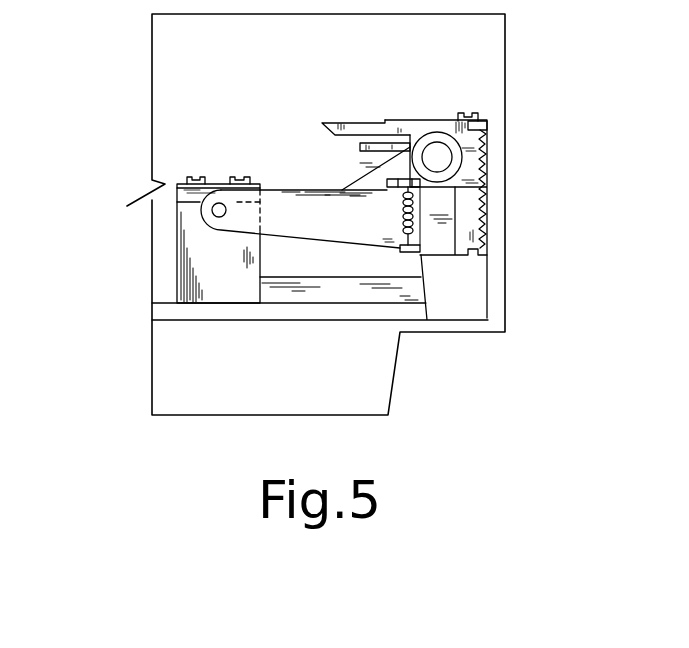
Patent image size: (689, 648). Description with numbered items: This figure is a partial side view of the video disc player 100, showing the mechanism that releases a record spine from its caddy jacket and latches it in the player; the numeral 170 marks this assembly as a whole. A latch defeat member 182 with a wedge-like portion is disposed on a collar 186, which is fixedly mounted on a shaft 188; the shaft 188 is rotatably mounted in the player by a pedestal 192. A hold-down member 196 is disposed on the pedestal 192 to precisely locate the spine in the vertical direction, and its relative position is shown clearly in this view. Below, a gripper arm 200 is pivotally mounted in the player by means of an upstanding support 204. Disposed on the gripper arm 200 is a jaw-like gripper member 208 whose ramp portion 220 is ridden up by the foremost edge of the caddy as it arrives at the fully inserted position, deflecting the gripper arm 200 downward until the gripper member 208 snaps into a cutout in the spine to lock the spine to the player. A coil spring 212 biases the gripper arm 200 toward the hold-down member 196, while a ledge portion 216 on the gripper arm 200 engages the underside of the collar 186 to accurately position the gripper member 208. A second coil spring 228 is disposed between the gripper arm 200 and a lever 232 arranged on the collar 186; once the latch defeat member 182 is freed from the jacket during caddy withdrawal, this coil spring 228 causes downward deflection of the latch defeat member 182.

The video disc player 100 is at (110, 360).
The clamping assembly 170 is at (478, 75).
The latch defeat member 182 is at (359, 147).
The collar 186 is at (438, 143).
The shaft 188 is at (435, 156).
The pedestal 192 is at (488, 160).
The hold-down member 196 is at (340, 123).
The gripper arm 200 is at (277, 199).
The upstanding support 204 is at (178, 257).
The gripper member 208 is at (366, 180).
The coil spring 212 is at (488, 203).
The ledge portion 216 is at (445, 231).
The ramp portion 220 is at (345, 188).
The coil spring 228 is at (414, 228).
The lever 232 is at (390, 187).